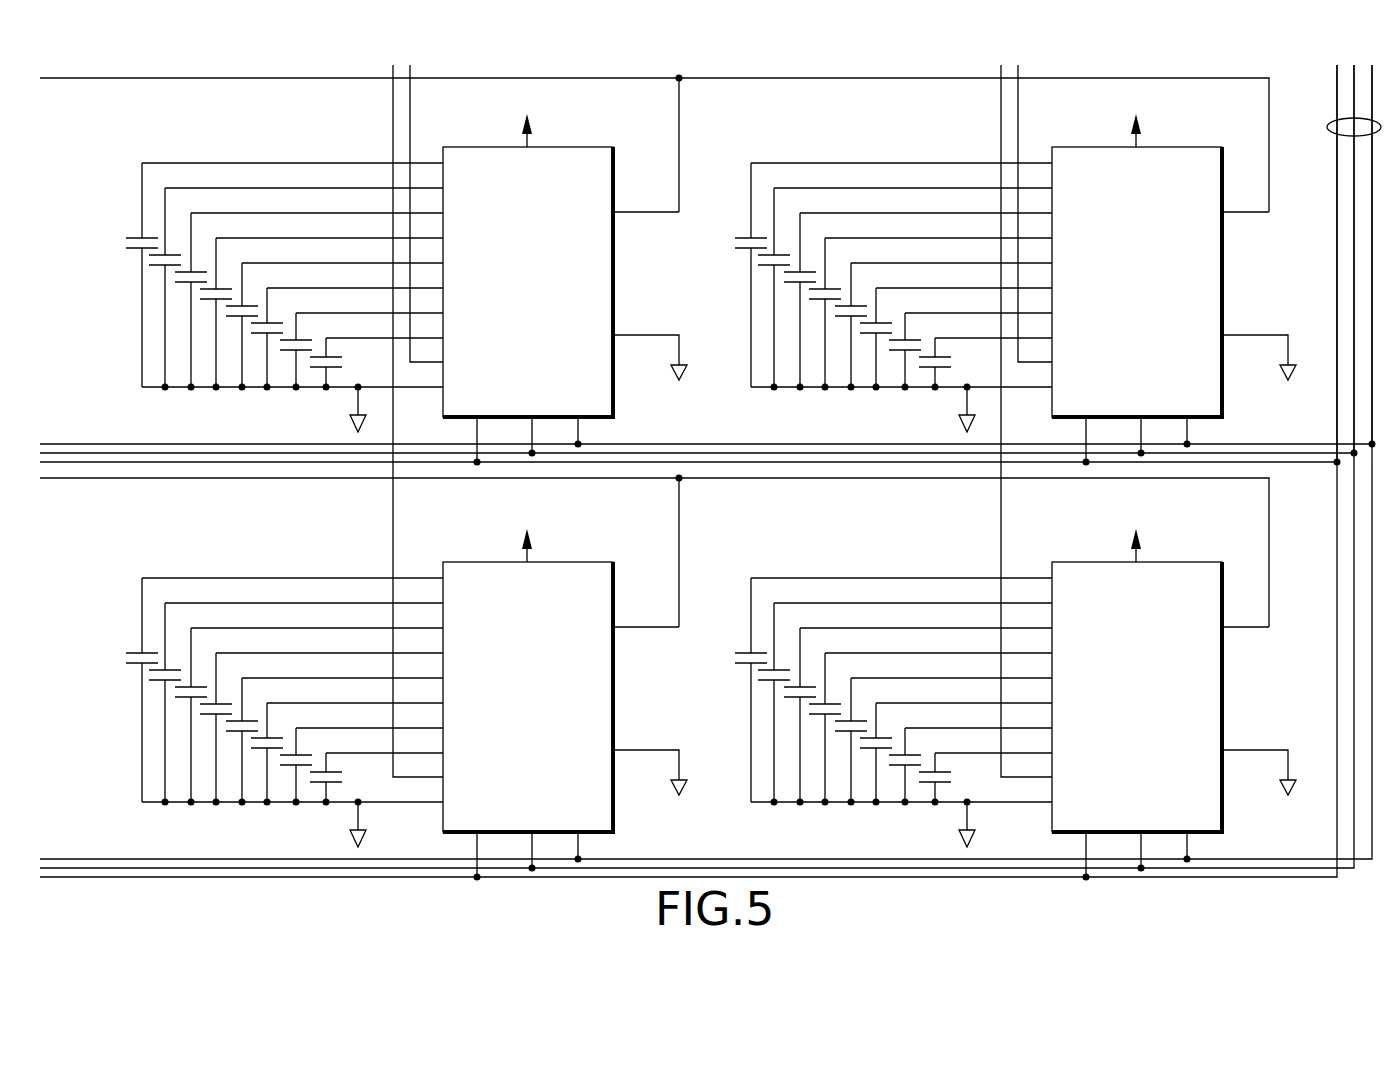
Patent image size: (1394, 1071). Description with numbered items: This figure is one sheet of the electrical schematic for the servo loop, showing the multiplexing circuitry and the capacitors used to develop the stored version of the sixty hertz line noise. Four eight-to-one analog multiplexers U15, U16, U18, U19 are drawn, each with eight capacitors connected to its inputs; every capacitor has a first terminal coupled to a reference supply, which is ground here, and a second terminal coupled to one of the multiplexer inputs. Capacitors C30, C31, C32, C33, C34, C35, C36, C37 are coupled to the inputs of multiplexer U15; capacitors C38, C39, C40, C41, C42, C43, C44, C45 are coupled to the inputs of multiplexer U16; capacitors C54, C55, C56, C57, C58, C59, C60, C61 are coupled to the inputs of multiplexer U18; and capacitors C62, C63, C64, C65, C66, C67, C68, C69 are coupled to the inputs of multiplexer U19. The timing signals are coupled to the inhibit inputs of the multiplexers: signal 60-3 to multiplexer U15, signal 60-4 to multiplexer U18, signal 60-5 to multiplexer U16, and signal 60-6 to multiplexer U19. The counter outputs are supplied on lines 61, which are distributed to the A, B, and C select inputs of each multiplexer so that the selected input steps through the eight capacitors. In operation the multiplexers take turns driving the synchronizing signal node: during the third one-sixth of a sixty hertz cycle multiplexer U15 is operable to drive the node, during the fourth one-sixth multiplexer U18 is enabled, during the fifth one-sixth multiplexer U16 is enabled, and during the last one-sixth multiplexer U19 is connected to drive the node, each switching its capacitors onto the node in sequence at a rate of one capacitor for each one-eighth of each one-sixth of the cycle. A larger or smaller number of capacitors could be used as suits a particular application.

The signal line 60-3 is at (410, 123).
The signal line 60-4 is at (393, 124).
The signal line 60-5 is at (1018, 123).
The signal line 60-6 is at (1001, 124).
The lines 61 is at (1330, 130).
The analog multiplexer U15 is at (567, 277).
The analog multiplexer U16 is at (1176, 277).
The analog multiplexer U18 is at (567, 692).
The analog multiplexer U19 is at (1176, 692).
The capacitor C30 is at (150, 236).
The capacitor C31 is at (173, 253).
The capacitor C32 is at (199, 270).
The capacitor C33 is at (224, 287).
The capacitor C34 is at (250, 304).
The capacitor C35 is at (275, 321).
The capacitor C36 is at (311, 339).
The capacitor C37 is at (331, 369).
The capacitor C38 is at (893, 275).
The capacitor C39 is at (905, 289).
The capacitor C40 is at (918, 302).
The capacitor C41 is at (930, 314).
The capacitor C42 is at (943, 327).
The capacitor C43 is at (956, 339).
The capacitor C44 is at (970, 352).
The capacitor C45 is at (968, 384).
The capacitor C54 is at (284, 690).
The capacitor C55 is at (296, 704).
The capacitor C56 is at (309, 717).
The capacitor C57 is at (321, 729).
The capacitor C58 is at (334, 742).
The capacitor C59 is at (347, 754).
The capacitor C60 is at (361, 767).
The capacitor C61 is at (359, 799).
The capacitor C62 is at (893, 690).
The capacitor C63 is at (905, 704).
The capacitor C64 is at (918, 717).
The capacitor C65 is at (930, 729).
The capacitor C66 is at (943, 742).
The capacitor C67 is at (956, 754).
The capacitor C68 is at (970, 767).
The capacitor C69 is at (968, 799).